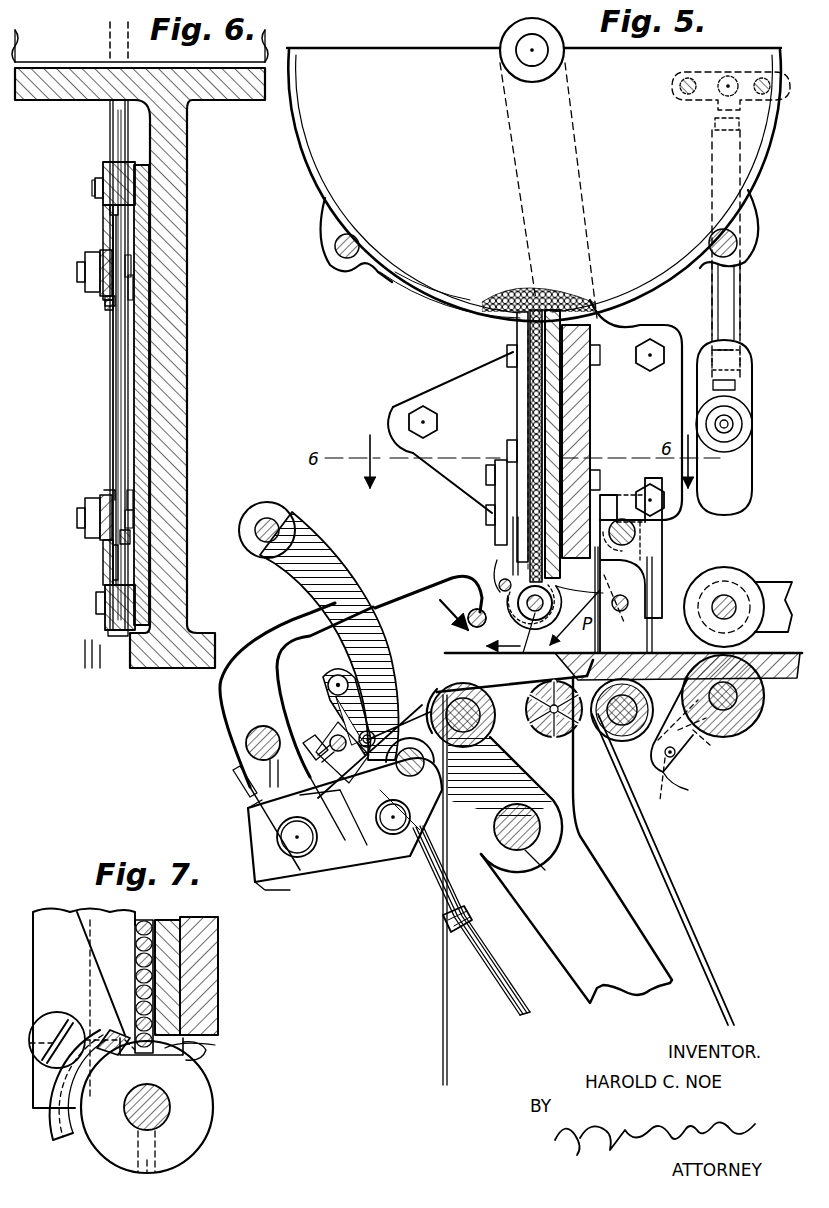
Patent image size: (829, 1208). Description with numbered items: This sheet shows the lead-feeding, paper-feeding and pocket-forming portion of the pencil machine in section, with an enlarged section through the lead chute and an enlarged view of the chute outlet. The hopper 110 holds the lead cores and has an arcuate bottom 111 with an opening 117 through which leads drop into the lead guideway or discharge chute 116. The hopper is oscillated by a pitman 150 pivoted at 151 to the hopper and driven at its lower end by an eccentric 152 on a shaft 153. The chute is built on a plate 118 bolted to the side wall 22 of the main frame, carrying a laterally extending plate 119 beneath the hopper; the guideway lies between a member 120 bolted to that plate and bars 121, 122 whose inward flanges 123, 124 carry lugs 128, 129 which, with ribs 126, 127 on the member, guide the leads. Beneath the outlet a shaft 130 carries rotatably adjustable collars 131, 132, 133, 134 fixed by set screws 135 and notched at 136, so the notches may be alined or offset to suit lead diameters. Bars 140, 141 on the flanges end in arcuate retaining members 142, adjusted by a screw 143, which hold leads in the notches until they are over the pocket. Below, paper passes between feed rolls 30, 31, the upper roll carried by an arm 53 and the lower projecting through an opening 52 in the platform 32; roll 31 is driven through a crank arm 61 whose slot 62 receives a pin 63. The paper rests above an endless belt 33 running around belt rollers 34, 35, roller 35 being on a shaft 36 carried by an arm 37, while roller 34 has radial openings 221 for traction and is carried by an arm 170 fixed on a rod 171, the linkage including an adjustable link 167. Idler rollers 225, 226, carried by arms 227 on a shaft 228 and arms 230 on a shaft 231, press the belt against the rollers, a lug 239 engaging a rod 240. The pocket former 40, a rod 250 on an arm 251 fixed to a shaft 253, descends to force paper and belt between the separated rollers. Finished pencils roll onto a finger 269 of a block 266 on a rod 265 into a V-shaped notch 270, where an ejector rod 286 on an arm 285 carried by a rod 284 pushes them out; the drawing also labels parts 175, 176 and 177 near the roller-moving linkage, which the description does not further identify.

In FIG. 6, the side wall of the main frame 22 is at (140, 46).
In FIG. 5, the upper paper feed roll 30 is at (728, 572).
In FIG. 5, the lower paper feed roll 31 is at (740, 730).
In FIG. 5, the platform 32 is at (650, 628).
In FIG. 5, the endless belt 33 is at (662, 868).
In FIG. 5, the belt roller 34 is at (472, 706).
In FIG. 5, the belt roller 35 is at (460, 690).
In FIG. 5, the shaft 36 is at (517, 808).
In FIG. 5, the arm 37 is at (492, 880).
In FIG. 5, the pocket former 40 is at (452, 617).
In FIG. 5, the opening 52 is at (668, 652).
In FIG. 5, the arm 53 is at (770, 592).
In FIG. 5, the crank arm 61 is at (680, 770).
In FIG. 5, the slot 62 is at (690, 760).
In FIG. 5, the pin 63 is at (668, 775).
In FIG. 5, the hopper 110 is at (380, 65).
In FIG. 5, the arcuate bottom 111 is at (442, 284).
In FIG. 5, the lead guideway or discharge chute 116 is at (528, 330).
In FIG. 7, the lead guideway or discharge chute 116 is at (145, 925).
In FIG. 5, the opening 117 is at (540, 292).
In FIG. 6, the plate 118 is at (245, 92).
In FIG. 6, the laterally extending plate 119 is at (176, 378).
In FIG. 5, the laterally extending plate 119 is at (580, 430).
In FIG. 7, the laterally extending plate 119 is at (205, 972).
In FIG. 6, the member 120 is at (143, 410).
In FIG. 5, the member 120 is at (555, 410).
In FIG. 7, the member 120 is at (180, 945).
In FIG. 6, the bar 121 is at (108, 217).
In FIG. 6, the bar 122 is at (118, 620).
In FIG. 6, the flange 123 is at (103, 233).
In FIG. 6, the flange 124 is at (104, 562).
In FIG. 6, the lug or rib 126 is at (115, 250).
In FIG. 5, the lug or rib 126 is at (543, 455).
In FIG. 6, the lug or rib 127 is at (128, 540).
In FIG. 6, the lug 128 is at (110, 310).
In FIG. 5, the lug 128 is at (527, 415).
In FIG. 6, the lug 129 is at (110, 492).
In FIG. 6, the shaft 130 is at (116, 130).
In FIG. 5, the shaft 130 is at (536, 618).
In FIG. 7, the shaft 130 is at (152, 1120).
In FIG. 6, the collar 131 is at (143, 515).
In FIG. 5, the collar 131 is at (620, 598).
In FIG. 7, the collar 131 is at (198, 1100).
In FIG. 6, the collar 132 is at (140, 493).
In FIG. 6, the collar 133 is at (132, 292).
In FIG. 6, the collar 134 is at (128, 268).
In FIG. 7, the set screw 135 is at (155, 1150).
In FIG. 5, the notch 136 is at (552, 598).
In FIG. 7, the notch 136 is at (190, 1063).
In FIG. 6, the bar 140 is at (93, 290).
In FIG. 7, the bar 140 is at (55, 925).
In FIG. 6, the bar 141 is at (92, 500).
In FIG. 5, the bar 141 is at (500, 505).
In FIG. 5, the arcuate guiding and retaining member 142 is at (520, 650).
In FIG. 7, the arcuate guiding and retaining member 142 is at (68, 1132).
In FIG. 5, the screw 143 is at (500, 565).
In FIG. 7, the screw 143 is at (55, 1020).
In FIG. 5, the pitman 150 is at (730, 298).
In FIG. 5, the pivot 151 is at (727, 80).
In FIG. 5, the eccentric 152 is at (737, 416).
In FIG. 5, the shaft 153 is at (730, 430).
In FIG. 5, the link 167 is at (510, 992).
In FIG. 5, the arm 170 is at (608, 893).
In FIG. 5, the rod 171 is at (533, 857).
In FIG. 5, the hole 175 is at (392, 830).
In FIG. 5, the block edge 176 is at (328, 858).
In FIG. 5, the hole 177 is at (295, 838).
In FIG. 5, the radial openings 221 is at (552, 735).
In FIG. 5, the idler roller 225 is at (625, 742).
In FIG. 5, the idler roller 226 is at (396, 822).
In FIG. 5, the arm 227 is at (636, 634).
In FIG. 5, the shaft 228 is at (640, 537).
In FIG. 5, the arm 230 is at (316, 597).
In FIG. 5, the shaft 231 is at (282, 522).
In FIG. 5, the lug 239 is at (642, 578).
In FIG. 5, the rod 240 is at (632, 600).
In FIG. 5, the rod 250 is at (484, 608).
In FIG. 5, the arm 251 is at (395, 598).
In FIG. 5, the shaft 253 is at (246, 748).
In FIG. 5, the rod 265 is at (327, 733).
In FIG. 5, the block 266 is at (345, 775).
In FIG. 5, the finger 269 is at (412, 700).
In FIG. 5, the V-shaped notch 270 is at (325, 870).
In FIG. 5, the rod 284 is at (352, 678).
In FIG. 5, the arm 285 is at (330, 690).
In FIG. 5, the ejector rod 286 is at (370, 732).